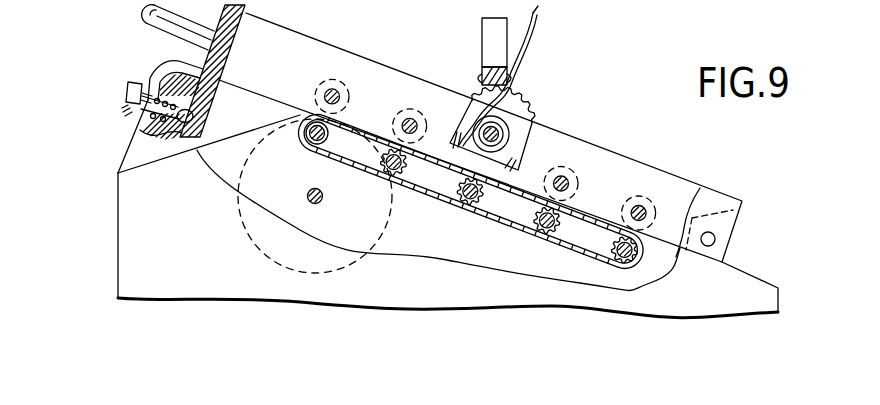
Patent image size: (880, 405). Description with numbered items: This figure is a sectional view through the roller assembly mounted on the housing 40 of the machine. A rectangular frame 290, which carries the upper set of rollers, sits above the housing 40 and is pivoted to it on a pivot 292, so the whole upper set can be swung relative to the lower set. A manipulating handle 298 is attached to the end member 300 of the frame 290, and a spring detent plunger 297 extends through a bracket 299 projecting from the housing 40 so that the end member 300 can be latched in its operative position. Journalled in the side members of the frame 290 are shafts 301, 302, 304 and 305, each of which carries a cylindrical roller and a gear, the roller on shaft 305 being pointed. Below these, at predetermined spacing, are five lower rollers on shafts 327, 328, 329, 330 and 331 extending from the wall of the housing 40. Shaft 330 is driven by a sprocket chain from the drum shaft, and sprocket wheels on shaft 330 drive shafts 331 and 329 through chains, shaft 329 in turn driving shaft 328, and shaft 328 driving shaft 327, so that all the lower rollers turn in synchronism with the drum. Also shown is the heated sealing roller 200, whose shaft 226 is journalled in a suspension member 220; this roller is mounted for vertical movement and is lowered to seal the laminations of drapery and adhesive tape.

The housing 40 is at (198, 260).
The heated sealing roller 200 is at (519, 118).
The suspension member 220 is at (485, 40).
The shaft of heated sealing roller 226 is at (499, 132).
The rectangular frame 290 is at (248, 11).
The pivot 292 is at (716, 239).
The spring detent plunger 297 is at (128, 96).
The manipulating handle 298 is at (152, 14).
The bracket 299 is at (135, 147).
The end member 300 is at (210, 57).
The shaft 301 is at (331, 80).
The shaft 302 is at (405, 118).
The shaft 304 is at (563, 180).
The shaft 305 is at (640, 203).
The shaft 327 is at (306, 135).
The shaft 328 is at (388, 162).
The shaft 329 is at (467, 197).
The shaft 330 is at (540, 218).
The shaft 331 is at (620, 252).